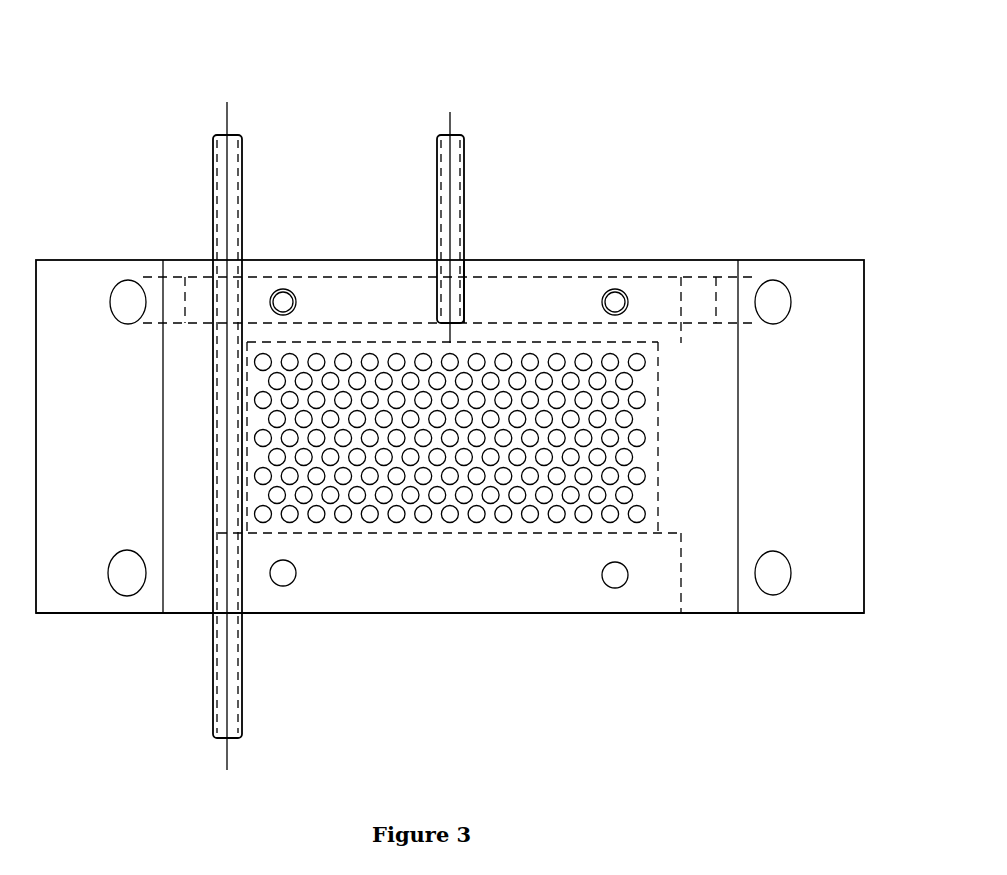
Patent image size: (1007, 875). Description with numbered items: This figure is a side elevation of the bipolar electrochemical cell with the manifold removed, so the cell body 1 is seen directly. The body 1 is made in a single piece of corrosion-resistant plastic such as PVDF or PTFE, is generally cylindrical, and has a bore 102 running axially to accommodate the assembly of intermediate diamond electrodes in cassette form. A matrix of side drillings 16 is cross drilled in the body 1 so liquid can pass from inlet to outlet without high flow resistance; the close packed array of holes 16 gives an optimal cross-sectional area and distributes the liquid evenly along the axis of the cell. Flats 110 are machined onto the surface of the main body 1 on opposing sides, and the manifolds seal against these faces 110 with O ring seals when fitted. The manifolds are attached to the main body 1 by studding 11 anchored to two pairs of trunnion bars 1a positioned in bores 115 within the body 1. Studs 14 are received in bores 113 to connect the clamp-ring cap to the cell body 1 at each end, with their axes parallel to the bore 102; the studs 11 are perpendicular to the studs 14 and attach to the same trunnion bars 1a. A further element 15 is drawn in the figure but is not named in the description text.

The cell body 1 is at (613, 260).
The trunnion bar 1a is at (508, 277).
The studding 11 is at (293, 290).
The stud 14 is at (435, 135).
The long rod 15 is at (213, 135).
The side drillings 16 is at (498, 482).
The bore 102 is at (660, 478).
The flat 110 is at (550, 597).
The bore 113 is at (463, 277).
The bore 115 is at (775, 293).